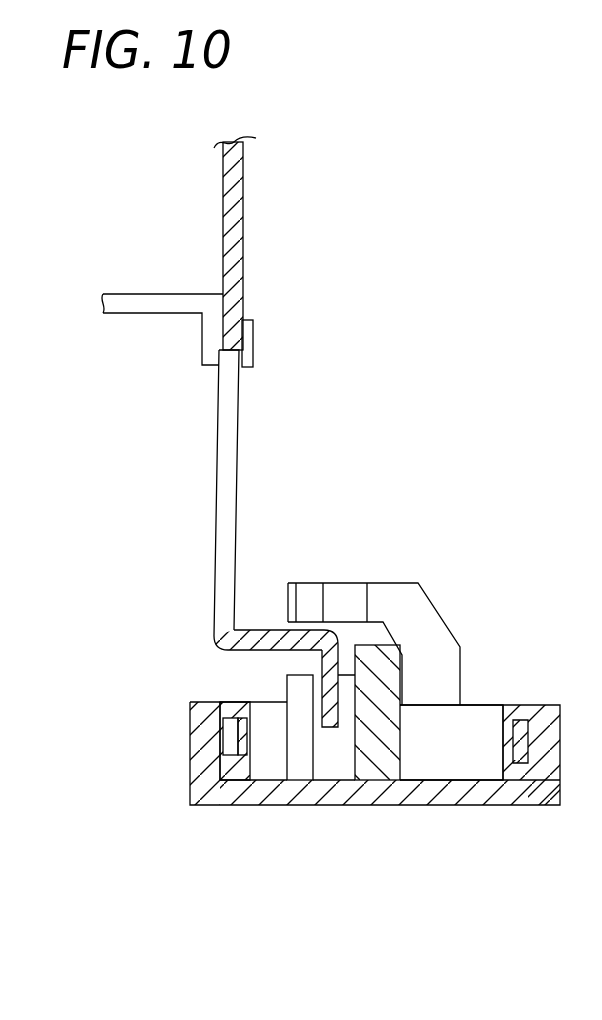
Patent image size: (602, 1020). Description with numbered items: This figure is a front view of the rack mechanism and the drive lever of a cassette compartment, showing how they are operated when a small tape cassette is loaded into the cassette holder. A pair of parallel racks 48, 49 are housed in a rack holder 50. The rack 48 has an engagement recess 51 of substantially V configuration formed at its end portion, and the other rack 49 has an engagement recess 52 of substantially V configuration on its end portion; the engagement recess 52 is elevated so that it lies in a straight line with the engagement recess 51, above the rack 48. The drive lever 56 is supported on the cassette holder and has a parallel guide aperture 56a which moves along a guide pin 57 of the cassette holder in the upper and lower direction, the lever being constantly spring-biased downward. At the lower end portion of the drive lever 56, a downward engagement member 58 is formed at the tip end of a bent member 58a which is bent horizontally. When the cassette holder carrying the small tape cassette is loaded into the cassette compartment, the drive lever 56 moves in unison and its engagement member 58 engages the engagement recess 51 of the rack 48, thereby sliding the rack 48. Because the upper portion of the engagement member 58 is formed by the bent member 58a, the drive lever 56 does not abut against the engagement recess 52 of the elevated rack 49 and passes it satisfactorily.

The rack 48 is at (265, 760).
The rack 49 is at (486, 720).
The rack holder 50 is at (442, 805).
The engagement recess 51 is at (303, 717).
The engagement recess 52 is at (337, 593).
The drive lever 56 is at (238, 231).
The guide aperture 56a is at (230, 431).
The guide pin 57 is at (253, 326).
The engagement member 58 is at (330, 687).
The bent member 58a is at (258, 628).